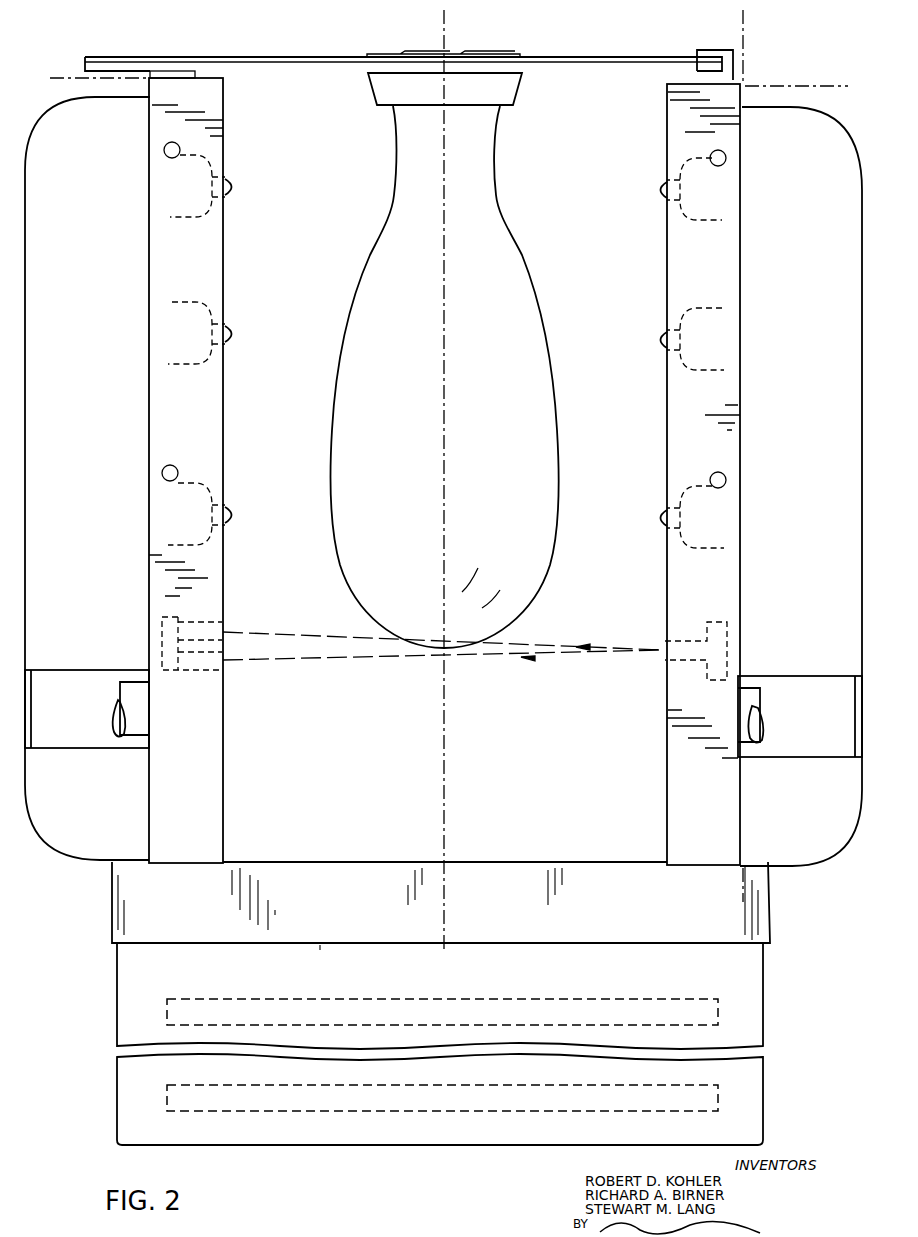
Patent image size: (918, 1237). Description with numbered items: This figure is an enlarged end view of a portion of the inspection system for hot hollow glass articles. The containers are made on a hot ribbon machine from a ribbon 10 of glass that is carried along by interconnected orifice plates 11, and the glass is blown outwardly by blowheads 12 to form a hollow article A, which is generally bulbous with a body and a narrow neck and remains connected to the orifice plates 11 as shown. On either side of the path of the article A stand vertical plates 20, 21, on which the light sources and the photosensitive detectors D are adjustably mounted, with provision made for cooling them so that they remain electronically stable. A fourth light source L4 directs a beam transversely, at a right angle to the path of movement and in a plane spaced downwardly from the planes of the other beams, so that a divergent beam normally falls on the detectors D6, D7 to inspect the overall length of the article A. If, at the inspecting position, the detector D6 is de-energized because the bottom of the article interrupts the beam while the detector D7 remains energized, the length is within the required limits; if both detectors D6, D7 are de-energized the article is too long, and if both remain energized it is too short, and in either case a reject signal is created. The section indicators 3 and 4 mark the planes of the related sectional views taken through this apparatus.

The ribbon 10 is at (316, 56).
The orifice plates 11 is at (642, 70).
The blowheads 12 is at (726, 10).
The vertical plate 20 is at (170, 88).
The vertical plate 21 is at (730, 95).
The section line 3- 3 is at (426, 10).
The section line 4- 4 is at (52, 96).
The hollow article A is at (536, 312).
The detectors D is at (234, 182).
The detector D6 is at (225, 632).
The detector D7 is at (226, 665).
The fourth light source L4 is at (660, 654).